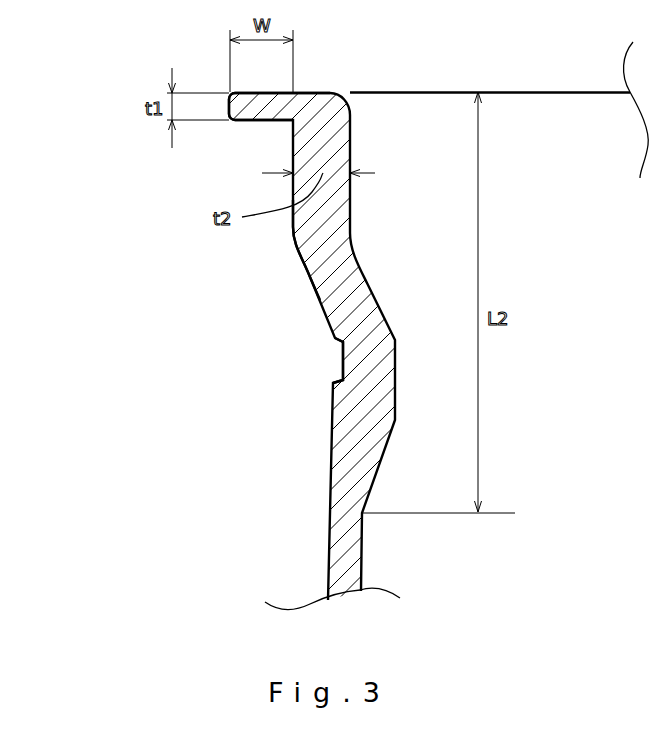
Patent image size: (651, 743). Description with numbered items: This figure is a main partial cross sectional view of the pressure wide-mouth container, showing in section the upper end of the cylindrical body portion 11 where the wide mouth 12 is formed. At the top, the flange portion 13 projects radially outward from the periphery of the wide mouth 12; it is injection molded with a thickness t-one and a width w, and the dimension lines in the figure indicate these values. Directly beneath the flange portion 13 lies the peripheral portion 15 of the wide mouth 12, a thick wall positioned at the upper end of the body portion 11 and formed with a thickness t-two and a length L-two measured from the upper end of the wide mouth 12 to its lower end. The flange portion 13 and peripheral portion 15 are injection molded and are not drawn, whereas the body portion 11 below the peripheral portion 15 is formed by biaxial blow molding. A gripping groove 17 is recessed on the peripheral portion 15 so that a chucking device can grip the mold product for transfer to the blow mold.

The body portion 11 is at (328, 578).
The wide mouth 12 is at (348, 105).
The flange portion 13 is at (257, 121).
The peripheral portion 15 is at (293, 226).
The gripping groove 17 is at (340, 357).